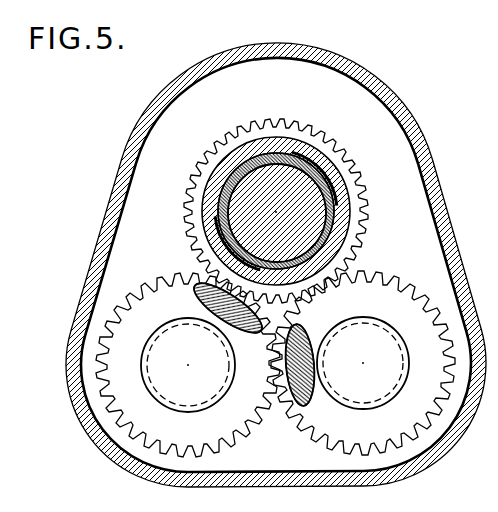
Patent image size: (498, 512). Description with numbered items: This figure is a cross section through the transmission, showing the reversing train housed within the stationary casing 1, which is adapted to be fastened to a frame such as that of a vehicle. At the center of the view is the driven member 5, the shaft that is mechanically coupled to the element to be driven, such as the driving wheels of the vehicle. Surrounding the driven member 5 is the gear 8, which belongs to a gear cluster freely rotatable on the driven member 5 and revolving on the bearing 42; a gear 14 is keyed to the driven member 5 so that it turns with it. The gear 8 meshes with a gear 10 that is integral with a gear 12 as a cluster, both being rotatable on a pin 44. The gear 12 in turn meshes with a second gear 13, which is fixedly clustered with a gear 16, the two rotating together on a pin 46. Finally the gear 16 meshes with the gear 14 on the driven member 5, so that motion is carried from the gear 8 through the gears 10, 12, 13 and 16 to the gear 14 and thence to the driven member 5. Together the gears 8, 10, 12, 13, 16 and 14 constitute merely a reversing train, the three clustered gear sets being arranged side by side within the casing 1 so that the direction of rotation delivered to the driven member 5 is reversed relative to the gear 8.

The stationary casing 1 is at (428, 146).
The driven member 5 is at (271, 173).
The gear 8 is at (307, 127).
The gear 10 is at (373, 297).
The gear 12 is at (296, 388).
The second gear 13 is at (152, 310).
The gear 14 is at (343, 150).
The gear 16 is at (213, 292).
The bearing 42 is at (331, 203).
The pin 44 is at (383, 365).
The pin 46 is at (167, 369).